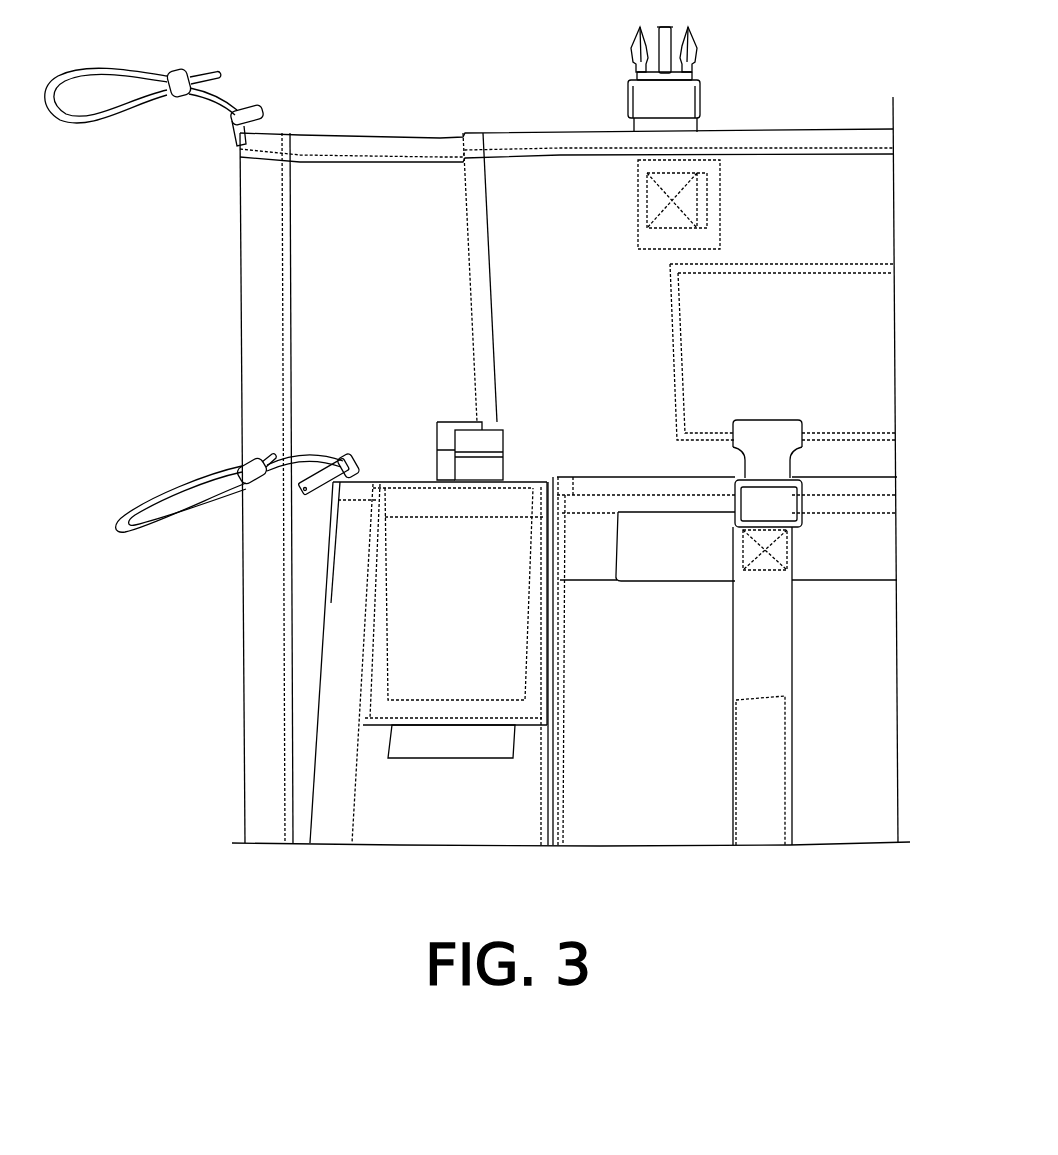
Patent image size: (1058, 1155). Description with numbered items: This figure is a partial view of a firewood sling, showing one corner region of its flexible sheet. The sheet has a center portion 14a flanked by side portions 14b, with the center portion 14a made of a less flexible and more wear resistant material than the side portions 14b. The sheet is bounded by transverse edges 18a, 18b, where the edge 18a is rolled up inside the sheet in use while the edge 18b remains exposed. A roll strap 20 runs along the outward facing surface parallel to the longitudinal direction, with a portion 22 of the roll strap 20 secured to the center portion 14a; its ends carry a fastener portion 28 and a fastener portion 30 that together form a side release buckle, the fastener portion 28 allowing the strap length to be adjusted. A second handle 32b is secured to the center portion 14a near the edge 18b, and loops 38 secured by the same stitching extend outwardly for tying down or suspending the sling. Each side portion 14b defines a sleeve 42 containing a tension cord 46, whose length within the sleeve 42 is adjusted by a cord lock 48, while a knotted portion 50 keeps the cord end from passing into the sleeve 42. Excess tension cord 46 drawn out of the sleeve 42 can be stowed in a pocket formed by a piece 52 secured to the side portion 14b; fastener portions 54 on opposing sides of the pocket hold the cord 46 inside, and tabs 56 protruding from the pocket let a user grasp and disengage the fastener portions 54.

The center portion 14a is at (657, 736).
The side portions 14b is at (440, 804).
The edge 18a is at (552, 132).
The edge 18b is at (637, 480).
The roll strap 20 is at (765, 675).
The portion 22 is at (750, 807).
The fastener portion 28 is at (630, 62).
The fastener portion 30 is at (767, 452).
The second handle 32b is at (817, 560).
The loop 38 is at (633, 552).
The sleeve 42 is at (253, 203).
The tension cord 46 is at (233, 97).
The cord lock 48 is at (266, 113).
The knotted portion 50 is at (188, 72).
The piece 52 is at (443, 632).
The fastener portions 54 is at (435, 507).
The tabs 56 is at (480, 462).